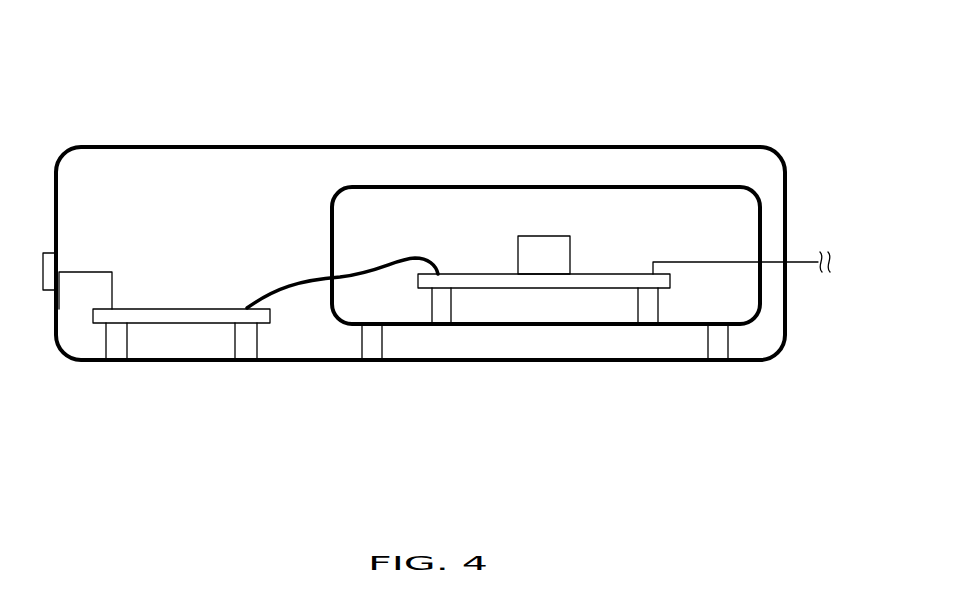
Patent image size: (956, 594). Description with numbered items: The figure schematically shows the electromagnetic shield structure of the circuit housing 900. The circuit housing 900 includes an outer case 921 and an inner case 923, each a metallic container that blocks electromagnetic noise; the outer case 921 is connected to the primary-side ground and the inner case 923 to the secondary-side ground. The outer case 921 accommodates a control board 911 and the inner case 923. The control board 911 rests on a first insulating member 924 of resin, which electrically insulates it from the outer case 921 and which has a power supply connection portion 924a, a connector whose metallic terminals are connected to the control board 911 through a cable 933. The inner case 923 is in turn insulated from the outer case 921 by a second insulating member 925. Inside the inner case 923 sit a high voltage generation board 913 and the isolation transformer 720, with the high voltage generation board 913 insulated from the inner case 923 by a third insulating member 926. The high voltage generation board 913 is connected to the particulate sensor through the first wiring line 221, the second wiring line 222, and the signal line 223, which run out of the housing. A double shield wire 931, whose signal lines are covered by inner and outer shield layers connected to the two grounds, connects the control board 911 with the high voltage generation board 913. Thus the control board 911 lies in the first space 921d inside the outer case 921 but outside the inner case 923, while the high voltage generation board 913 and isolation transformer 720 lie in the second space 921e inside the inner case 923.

The circuit housing 900 is at (180, 83).
The outer case 921 is at (635, 147).
The first space 921d is at (143, 183).
The second space 921e is at (558, 210).
The inner case 923 is at (672, 186).
The power supply connection portion 924a is at (46, 292).
The cable 933 is at (85, 272).
The control board 911 is at (137, 308).
The first insulating member 924 is at (235, 343).
The double shield wire 931 is at (278, 283).
The isolation transformer 720 is at (530, 236).
The high voltage generation board 913 is at (493, 273).
The third insulating member 926 is at (452, 303).
The second insulating member 925 is at (377, 342).
The first wiring line 221 is at (744, 201).
The second wiring line 222 is at (744, 216).
The signal line 223 is at (797, 262).